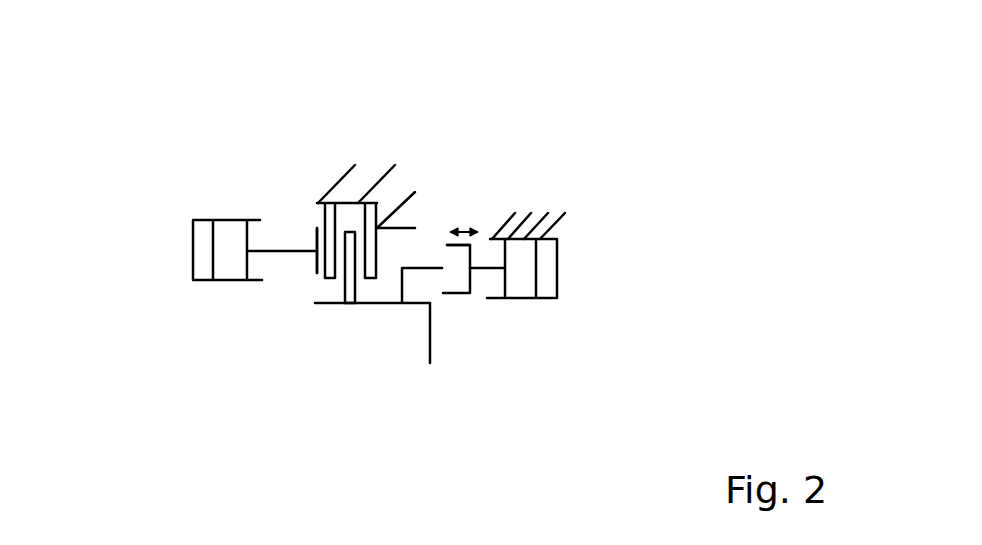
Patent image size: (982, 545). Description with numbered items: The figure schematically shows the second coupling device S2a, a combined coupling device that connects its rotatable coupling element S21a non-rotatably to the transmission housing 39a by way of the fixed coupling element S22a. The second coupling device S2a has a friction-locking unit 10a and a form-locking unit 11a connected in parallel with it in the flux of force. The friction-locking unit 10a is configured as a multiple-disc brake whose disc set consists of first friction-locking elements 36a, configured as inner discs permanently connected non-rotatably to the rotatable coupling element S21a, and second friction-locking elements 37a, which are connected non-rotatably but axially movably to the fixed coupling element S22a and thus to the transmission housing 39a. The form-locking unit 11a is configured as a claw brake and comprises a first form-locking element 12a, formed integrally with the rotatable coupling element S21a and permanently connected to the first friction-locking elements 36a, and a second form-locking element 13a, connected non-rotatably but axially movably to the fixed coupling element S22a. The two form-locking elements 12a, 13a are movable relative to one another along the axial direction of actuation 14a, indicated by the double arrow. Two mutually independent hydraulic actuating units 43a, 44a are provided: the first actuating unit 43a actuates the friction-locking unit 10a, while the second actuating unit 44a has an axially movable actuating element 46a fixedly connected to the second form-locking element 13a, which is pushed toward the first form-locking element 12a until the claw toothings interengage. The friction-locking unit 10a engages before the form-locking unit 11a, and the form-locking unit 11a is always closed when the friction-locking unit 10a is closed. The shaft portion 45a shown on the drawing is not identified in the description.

The second coupling device S2a is at (216, 128).
The fixed coupling element S22a is at (340, 205).
The transmission housing 39a is at (386, 171).
The first form-locking element 12a is at (447, 218).
The form-locking unit 11a is at (466, 228).
The direction of actuation 14a is at (472, 222).
The second friction-locking elements 37a is at (323, 217).
The first actuating unit 43a is at (200, 290).
The first shaft section 45a is at (282, 255).
The friction-locking unit 10a is at (301, 292).
The first friction-locking elements 36a is at (344, 287).
The rotatable coupling element S21a is at (377, 303).
The second form-locking element 13a is at (462, 298).
The actuating element 46a is at (476, 297).
The second actuating unit 44a is at (556, 312).